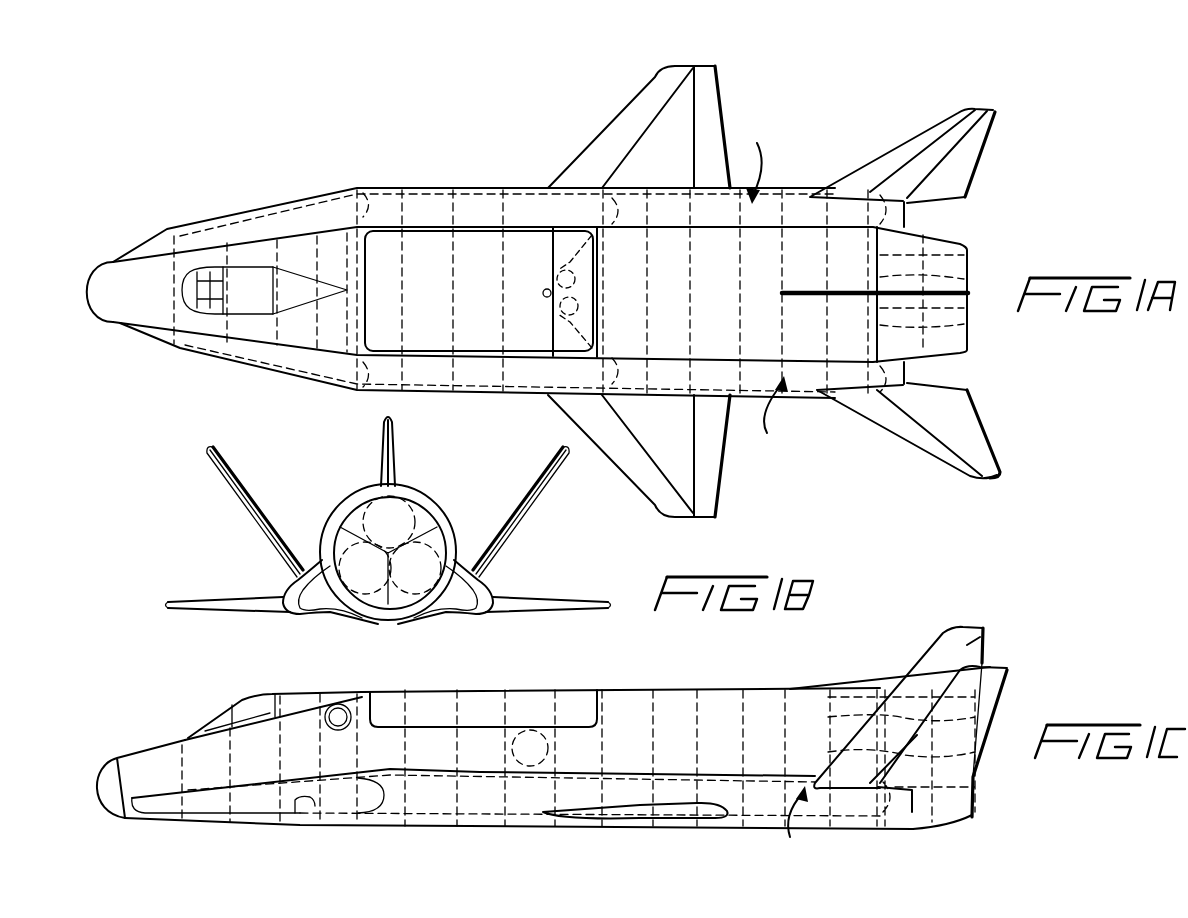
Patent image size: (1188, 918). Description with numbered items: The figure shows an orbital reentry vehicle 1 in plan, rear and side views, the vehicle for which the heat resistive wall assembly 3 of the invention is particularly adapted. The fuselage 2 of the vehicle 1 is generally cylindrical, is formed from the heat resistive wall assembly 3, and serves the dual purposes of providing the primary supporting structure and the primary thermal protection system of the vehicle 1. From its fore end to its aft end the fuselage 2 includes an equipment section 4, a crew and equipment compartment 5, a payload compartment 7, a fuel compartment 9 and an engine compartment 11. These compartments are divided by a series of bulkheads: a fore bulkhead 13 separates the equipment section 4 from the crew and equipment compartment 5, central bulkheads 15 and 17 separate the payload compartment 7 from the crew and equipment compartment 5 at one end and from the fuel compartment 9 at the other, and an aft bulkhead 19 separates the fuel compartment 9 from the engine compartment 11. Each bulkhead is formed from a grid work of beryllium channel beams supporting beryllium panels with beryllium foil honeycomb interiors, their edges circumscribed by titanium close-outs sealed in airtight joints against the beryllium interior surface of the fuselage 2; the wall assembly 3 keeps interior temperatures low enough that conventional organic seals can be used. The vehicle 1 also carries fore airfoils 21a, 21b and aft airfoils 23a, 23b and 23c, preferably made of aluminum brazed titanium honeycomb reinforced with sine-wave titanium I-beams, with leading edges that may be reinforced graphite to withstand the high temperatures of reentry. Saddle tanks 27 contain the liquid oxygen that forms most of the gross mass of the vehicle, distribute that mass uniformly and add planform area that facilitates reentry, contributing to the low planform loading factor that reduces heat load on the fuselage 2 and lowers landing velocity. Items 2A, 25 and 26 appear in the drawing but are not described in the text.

In FIG. 1A, the reentry vehicle 1 is at (262, 142).
In FIG. 1B, the reentry vehicle 1 is at (294, 476).
In FIG. 1C, the reentry vehicle 1 is at (127, 735).
In FIG. 1A, the fuselage 2 is at (463, 222).
In FIG. 1B, the fuselage 2 is at (347, 476).
In FIG. 1C, the fuselage 2 is at (380, 692).
In FIG. 1C, the fuselage access hatch 2A is at (530, 730).
In FIG. 1A, the heat resistive wall assembly 3 is at (545, 225).
In FIG. 1B, the heat resistive wall assembly 3 is at (321, 519).
In FIG. 1C, the heat resistive wall assembly 3 is at (450, 700).
In FIG. 1A, the equipment section 4 is at (140, 303).
In FIG. 1C, the equipment section 4 is at (158, 779).
In FIG. 1A, the crew and equipment compartment 5 is at (251, 303).
In FIG. 1C, the crew and equipment compartment 5 is at (262, 764).
In FIG. 1A, the payload compartment 7 is at (482, 305).
In FIG. 1C, the payload compartment 7 is at (439, 760).
In FIG. 1A, the fuel compartment 9 is at (723, 305).
In FIG. 1C, the fuel compartment 9 is at (726, 747).
In FIG. 1A, the engine compartment 11 is at (911, 253).
In FIG. 1B, the engine compartment 11 is at (423, 515).
In FIG. 1C, the engine compartment 11 is at (897, 702).
In FIG. 1A, the fore bulkhead 13 is at (167, 243).
In FIG. 1C, the fore bulkhead 13 is at (180, 752).
In FIG. 1A, the central bulkhead 15 is at (358, 190).
In FIG. 1C, the central bulkhead 15 is at (353, 697).
In FIG. 1A, the central bulkhead 17 is at (604, 264).
In FIG. 1C, the central bulkhead 17 is at (603, 727).
In FIG. 1A, the aft bulkhead 19 is at (873, 247).
In FIG. 1B, the aft bulkhead 19 is at (423, 517).
In FIG. 1C, the aft bulkhead 19 is at (873, 717).
In FIG. 1A, the fore airfoil 21a is at (665, 156).
In FIG. 1B, the fore airfoil 21a is at (580, 602).
In FIG. 1A, the fore airfoil 21b is at (665, 438).
In FIG. 1B, the fore airfoil 21b is at (228, 600).
In FIG. 1C, the fore airfoil 21b is at (640, 815).
In FIG. 1A, the aft airfoil 23a is at (958, 184).
In FIG. 1B, the aft airfoil 23a is at (512, 550).
In FIG. 1A, the aft airfoil 23b is at (955, 419).
In FIG. 1B, the aft airfoil 23b is at (250, 520).
In FIG. 1C, the aft airfoil 23b is at (987, 687).
In FIG. 1A, the aft airfoil 23c is at (937, 291).
In FIG. 1B, the aft airfoil 23c is at (393, 446).
In FIG. 1C, the aft airfoil 23c is at (980, 632).
In FIG. 1A, the wing 25 is at (597, 130).
In FIG. 1C, the wing 25 is at (543, 814).
In FIG. 1A, the fin leading edge 26 is at (897, 142).
In FIG. 1C, the fin leading edge 26 is at (923, 647).
In FIG. 1A, the saddle tank 27 is at (771, 284).
In FIG. 1C, the saddle tank 27 is at (808, 820).